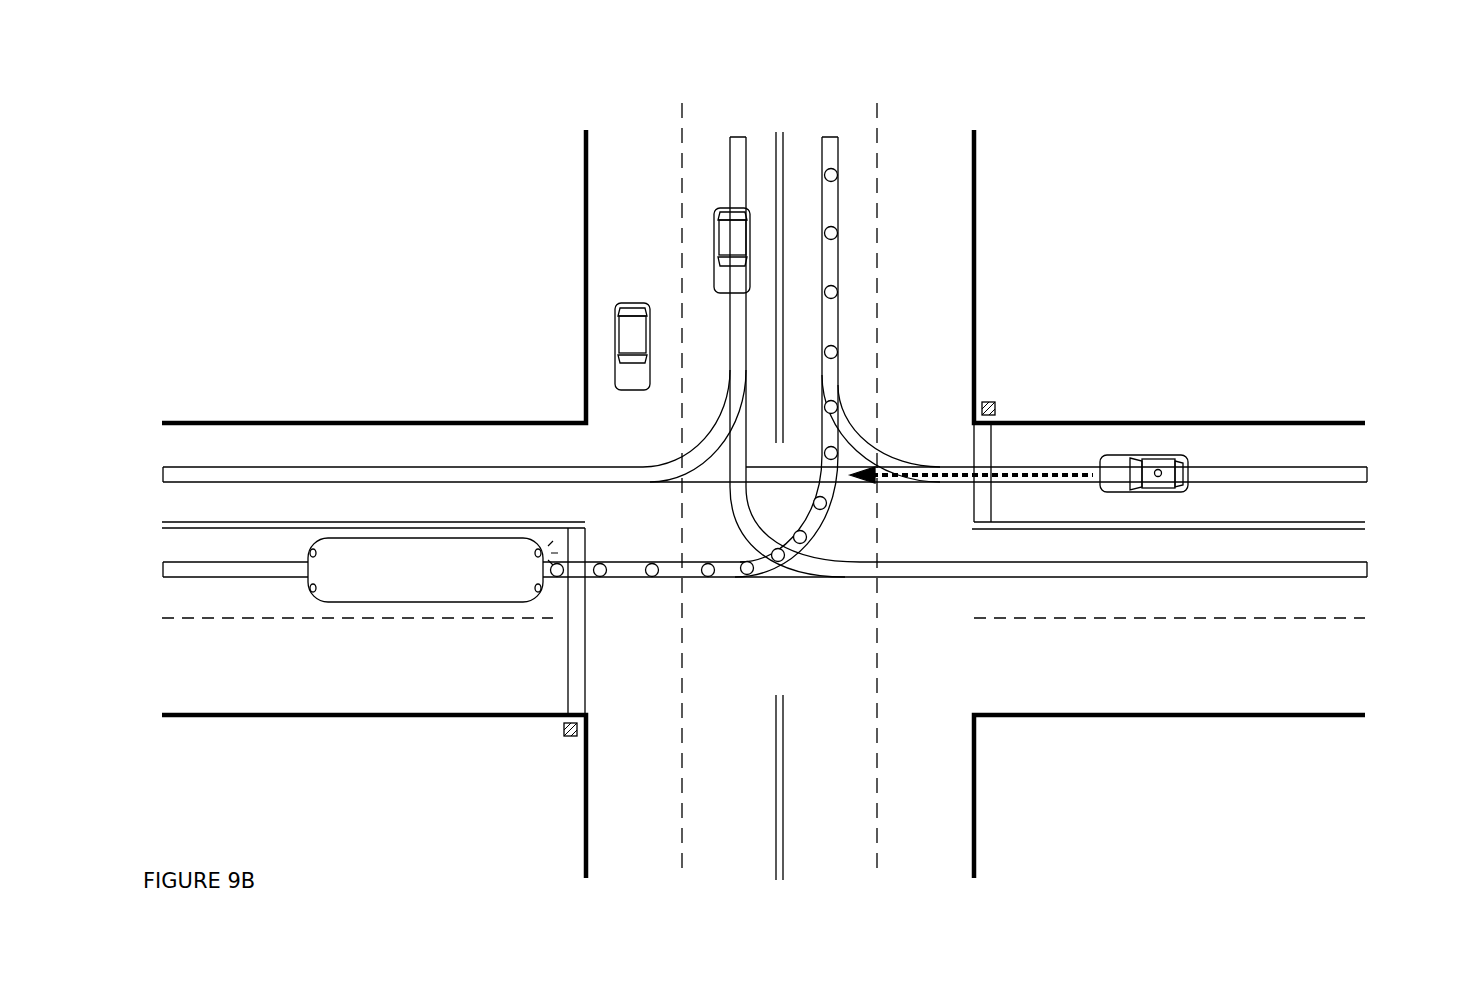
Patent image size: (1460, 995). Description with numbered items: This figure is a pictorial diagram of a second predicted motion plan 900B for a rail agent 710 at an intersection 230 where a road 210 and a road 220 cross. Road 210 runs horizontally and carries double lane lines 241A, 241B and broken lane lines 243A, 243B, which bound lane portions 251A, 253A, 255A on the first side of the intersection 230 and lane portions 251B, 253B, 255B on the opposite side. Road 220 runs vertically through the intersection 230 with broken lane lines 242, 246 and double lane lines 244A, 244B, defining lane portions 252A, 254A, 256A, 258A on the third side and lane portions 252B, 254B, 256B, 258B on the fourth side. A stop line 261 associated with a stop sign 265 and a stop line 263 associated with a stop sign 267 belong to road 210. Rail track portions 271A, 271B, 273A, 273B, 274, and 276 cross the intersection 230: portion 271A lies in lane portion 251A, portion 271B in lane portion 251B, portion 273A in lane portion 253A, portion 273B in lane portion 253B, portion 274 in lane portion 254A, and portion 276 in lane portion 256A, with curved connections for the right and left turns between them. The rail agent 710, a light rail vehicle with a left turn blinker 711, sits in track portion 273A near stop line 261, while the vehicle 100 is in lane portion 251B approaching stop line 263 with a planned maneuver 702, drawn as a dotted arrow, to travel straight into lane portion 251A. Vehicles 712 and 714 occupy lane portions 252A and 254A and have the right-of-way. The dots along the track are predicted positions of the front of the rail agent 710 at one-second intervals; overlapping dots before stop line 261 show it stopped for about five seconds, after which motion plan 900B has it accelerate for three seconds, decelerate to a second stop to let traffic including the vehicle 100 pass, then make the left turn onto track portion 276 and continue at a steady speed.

The vehicle 100 is at (1130, 455).
The road 210 is at (317, 415).
The road 220 is at (982, 258).
The intersection 230 is at (807, 612).
The lane line 241A is at (162, 524).
The lane line 241B is at (1357, 520).
The lane line 242 is at (684, 115).
The lane line 243A is at (162, 618).
The lane line 243B is at (1357, 618).
The lane line 244A is at (779, 130).
The lane line 244B is at (780, 882).
The lane line 246 is at (878, 125).
The lane portion 251A is at (218, 456).
The lane portion 251B is at (1363, 457).
The lane portion 252A is at (666, 126).
The lane portion 252B is at (653, 876).
The lane portion 253A is at (218, 554).
The lane portion 253B is at (1363, 557).
The lane portion 254A is at (767, 126).
The lane portion 254B is at (753, 876).
The lane portion 255A is at (218, 676).
The lane portion 255B is at (1363, 682).
The lane portion 256A is at (865, 126).
The lane portion 256B is at (848, 876).
The lane portion 258A is at (963, 126).
The lane portion 258B is at (950, 876).
The stop line 261 is at (568, 703).
The stop line 263 is at (987, 437).
The stop sign 265 is at (570, 738).
The stop sign 267 is at (990, 402).
The rail track portion 271A is at (162, 475).
The rail track portion 271B is at (1357, 475).
The rail track portion 273A is at (162, 570).
The rail track portion 273B is at (1357, 567).
The rail track portion 274 is at (733, 172).
The rail track portion 276 is at (840, 158).
The planned maneuver 702 is at (1003, 482).
The rail agent 710 is at (446, 582).
The left turn blinker 711 is at (543, 548).
The vehicle 712 is at (615, 347).
The vehicle 714 is at (716, 238).
The predicted motion plan 900B is at (248, 841).